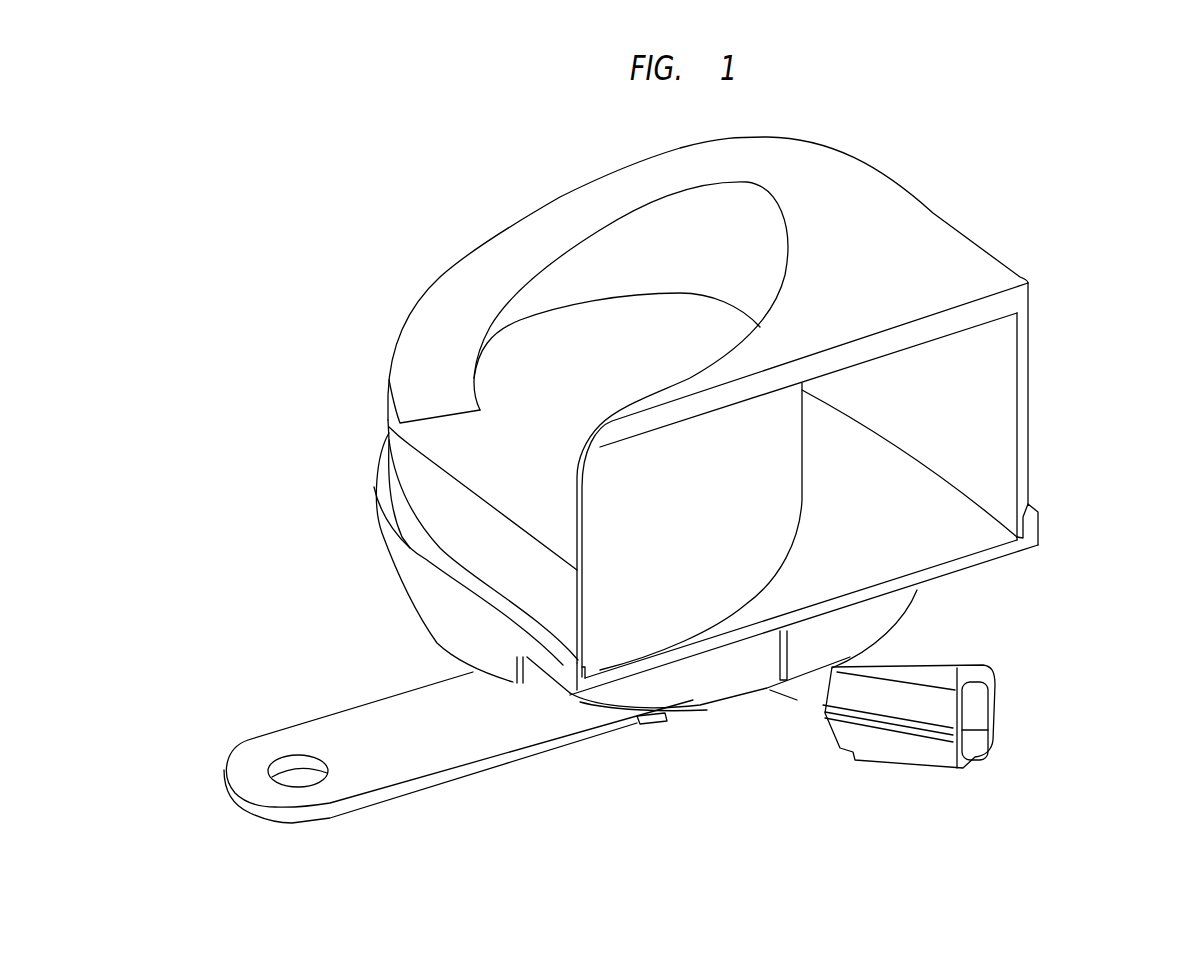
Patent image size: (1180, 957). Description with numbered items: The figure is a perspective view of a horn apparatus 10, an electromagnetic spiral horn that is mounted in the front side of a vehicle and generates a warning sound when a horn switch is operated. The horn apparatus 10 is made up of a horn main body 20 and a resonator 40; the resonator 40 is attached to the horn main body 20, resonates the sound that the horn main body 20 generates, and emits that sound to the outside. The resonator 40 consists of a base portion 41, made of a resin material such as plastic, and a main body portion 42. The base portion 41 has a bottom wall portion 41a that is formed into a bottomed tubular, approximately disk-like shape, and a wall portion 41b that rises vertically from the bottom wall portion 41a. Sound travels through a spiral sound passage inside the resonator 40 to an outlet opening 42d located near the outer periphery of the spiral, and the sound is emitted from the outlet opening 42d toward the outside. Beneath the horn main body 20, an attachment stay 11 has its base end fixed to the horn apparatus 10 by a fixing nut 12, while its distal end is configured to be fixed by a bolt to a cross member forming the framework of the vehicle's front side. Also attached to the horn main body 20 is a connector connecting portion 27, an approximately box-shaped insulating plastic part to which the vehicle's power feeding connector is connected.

The horn apparatus 10 is at (382, 243).
The resonator 40 is at (928, 188).
The main body portion 42 is at (893, 263).
The outlet opening 42d is at (994, 408).
The base portion 41 is at (443, 580).
The bottom wall portion 41a is at (893, 537).
The wall portion 41b is at (855, 623).
The attachment stay 11 is at (397, 737).
The fixing nut 12 is at (663, 720).
The horn main body 20 is at (708, 714).
The connector connecting portion 27 is at (903, 747).